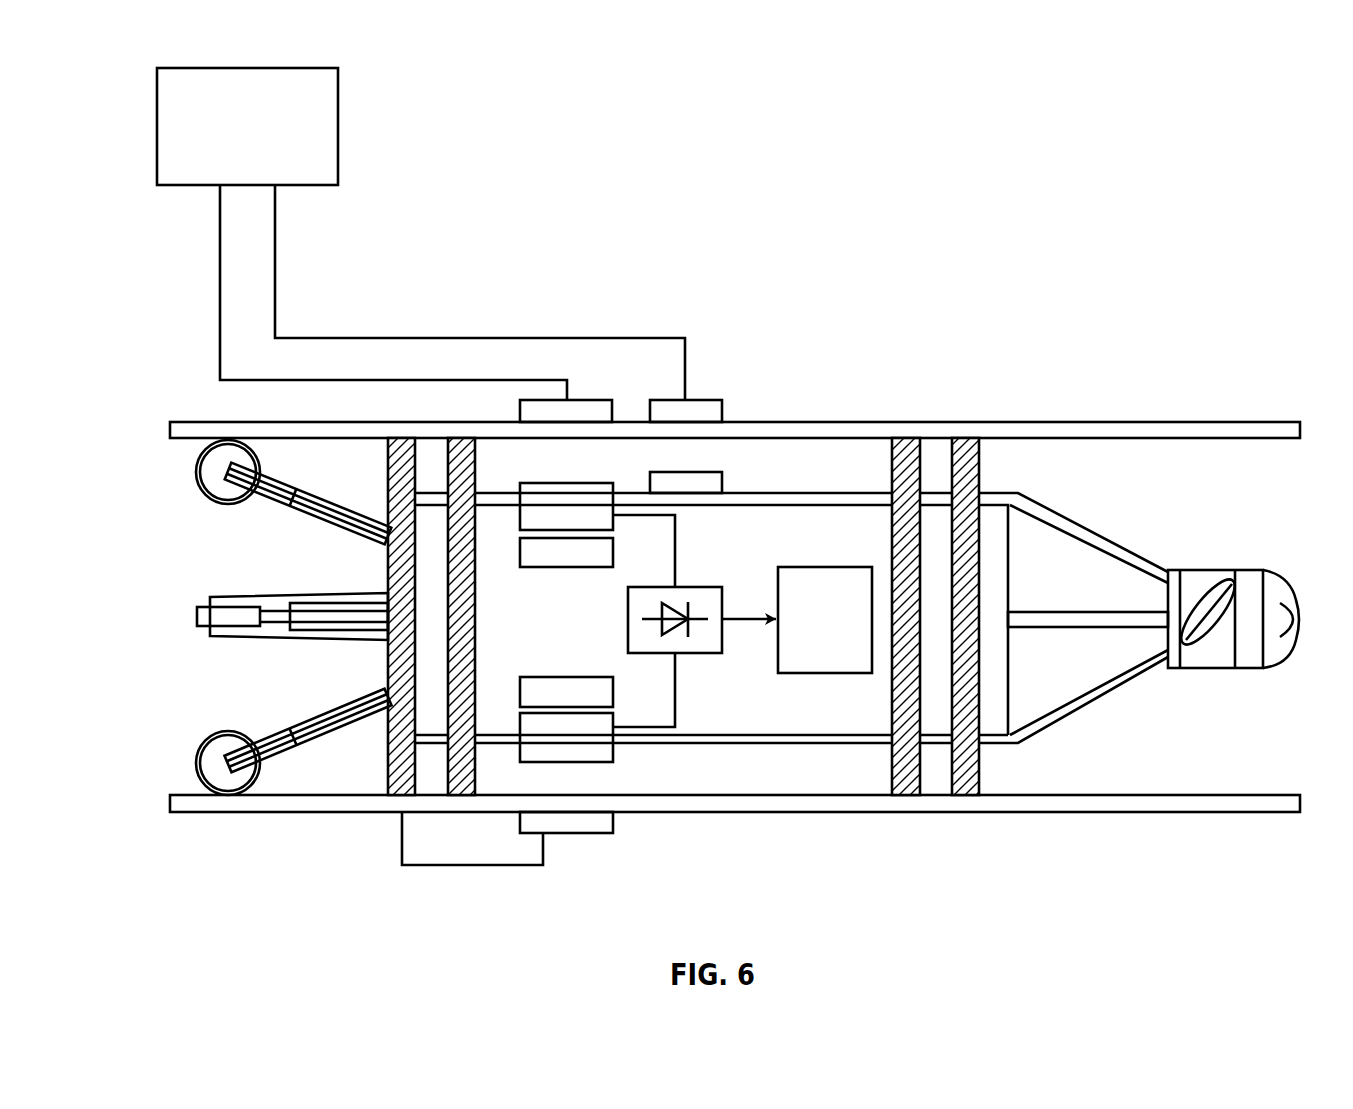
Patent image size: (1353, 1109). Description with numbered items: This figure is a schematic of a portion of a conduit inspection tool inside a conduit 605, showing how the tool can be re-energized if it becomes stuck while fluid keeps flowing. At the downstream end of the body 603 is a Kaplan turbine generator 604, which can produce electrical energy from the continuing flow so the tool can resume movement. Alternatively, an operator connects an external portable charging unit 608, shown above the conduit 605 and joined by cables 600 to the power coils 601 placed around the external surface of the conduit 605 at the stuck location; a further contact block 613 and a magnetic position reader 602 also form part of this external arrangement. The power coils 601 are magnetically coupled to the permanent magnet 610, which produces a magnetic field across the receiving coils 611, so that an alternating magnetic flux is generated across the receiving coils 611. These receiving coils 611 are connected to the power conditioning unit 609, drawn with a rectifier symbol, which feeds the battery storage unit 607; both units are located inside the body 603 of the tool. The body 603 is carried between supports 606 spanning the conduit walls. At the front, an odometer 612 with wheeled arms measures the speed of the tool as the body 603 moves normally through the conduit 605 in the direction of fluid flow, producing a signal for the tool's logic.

The charging cable / wire 600 is at (352, 380).
The power coils 601 is at (592, 392).
The magnetic position reader 602 is at (712, 460).
The body 603 is at (790, 478).
The Kaplan turbine generator 604 is at (1230, 677).
The conduit 605 is at (1247, 815).
The support pillar 606 is at (903, 797).
The battery storage unit 607 is at (808, 565).
The external portable charging unit 608 is at (345, 124).
The power conditioning unit 609 is at (705, 655).
The permanent magnet 610 is at (575, 570).
The receiving coils 611 is at (547, 622).
The odometer 612 is at (195, 472).
The second charging contact block 613 is at (665, 392).